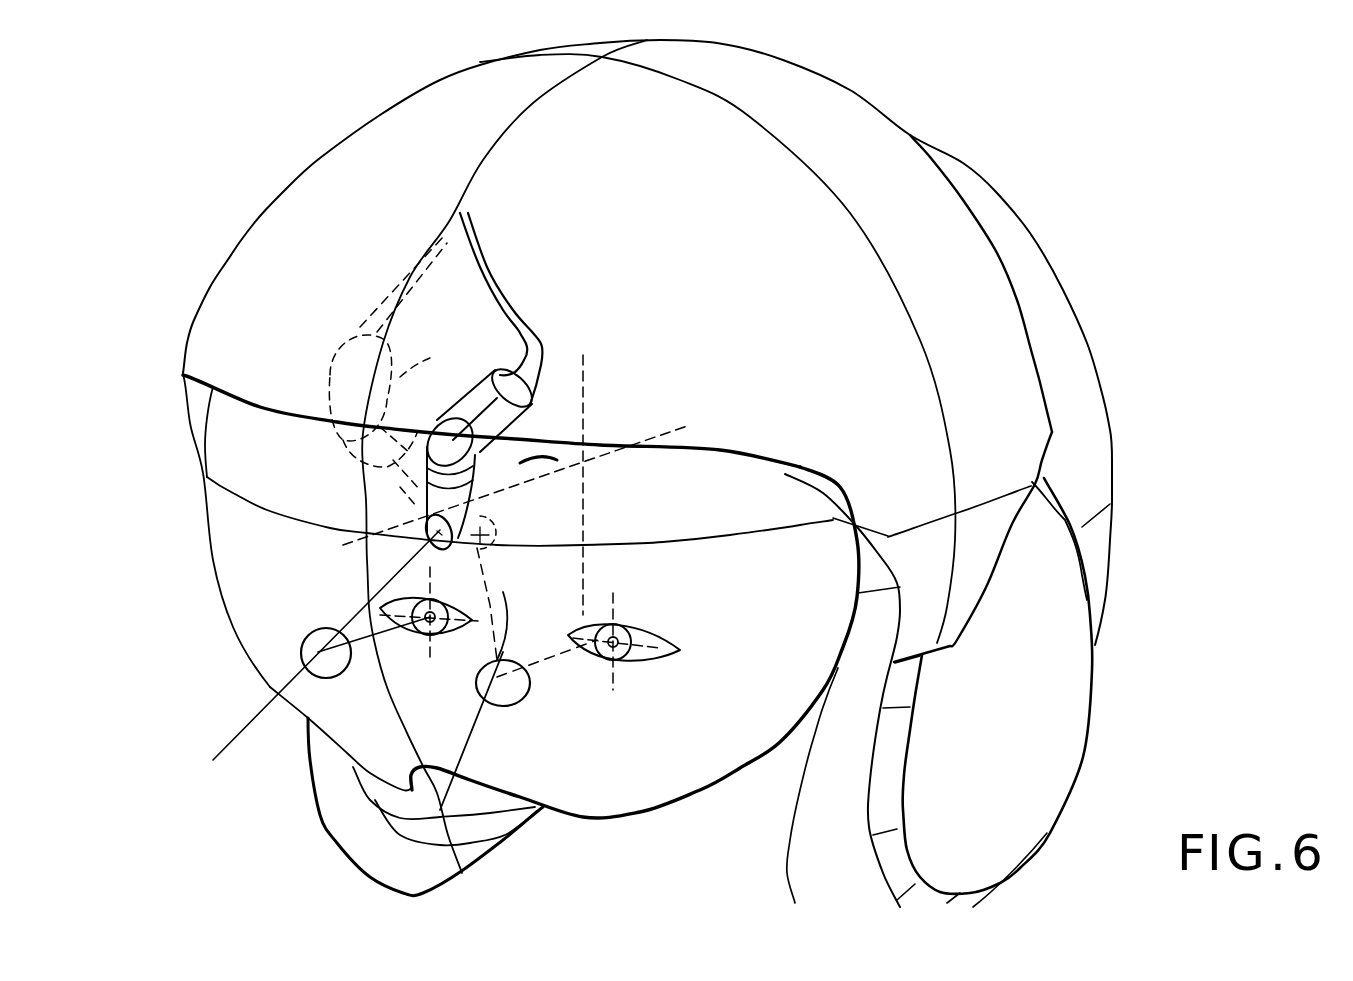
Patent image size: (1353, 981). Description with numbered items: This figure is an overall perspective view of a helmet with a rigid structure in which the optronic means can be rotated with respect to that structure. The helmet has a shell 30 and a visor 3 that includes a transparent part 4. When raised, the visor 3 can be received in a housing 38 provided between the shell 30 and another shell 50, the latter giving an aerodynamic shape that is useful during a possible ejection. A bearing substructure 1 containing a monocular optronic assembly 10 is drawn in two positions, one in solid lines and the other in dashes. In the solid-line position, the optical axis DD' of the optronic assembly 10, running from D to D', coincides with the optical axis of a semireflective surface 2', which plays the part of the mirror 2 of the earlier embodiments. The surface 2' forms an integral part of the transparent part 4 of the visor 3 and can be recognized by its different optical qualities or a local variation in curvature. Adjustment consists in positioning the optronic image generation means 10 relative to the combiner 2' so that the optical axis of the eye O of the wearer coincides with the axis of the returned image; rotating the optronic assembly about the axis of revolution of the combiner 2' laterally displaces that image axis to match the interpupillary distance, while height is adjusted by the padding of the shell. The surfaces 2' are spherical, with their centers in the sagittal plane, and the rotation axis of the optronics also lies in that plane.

The shell 50 is at (303, 167).
The housing 38 is at (265, 407).
The shell 30 is at (250, 463).
The monocular optronic assembly 10 is at (548, 401).
The bearing substructure 1 is at (470, 383).
The mirror 2 is at (516, 522).
The semireflective surface 2' is at (429, 656).
The visor 3 is at (738, 750).
The transparent part 4 is at (653, 780).
The optical axis D is at (323, 645).
The optical axis D' is at (412, 551).
The eye O is at (450, 637).